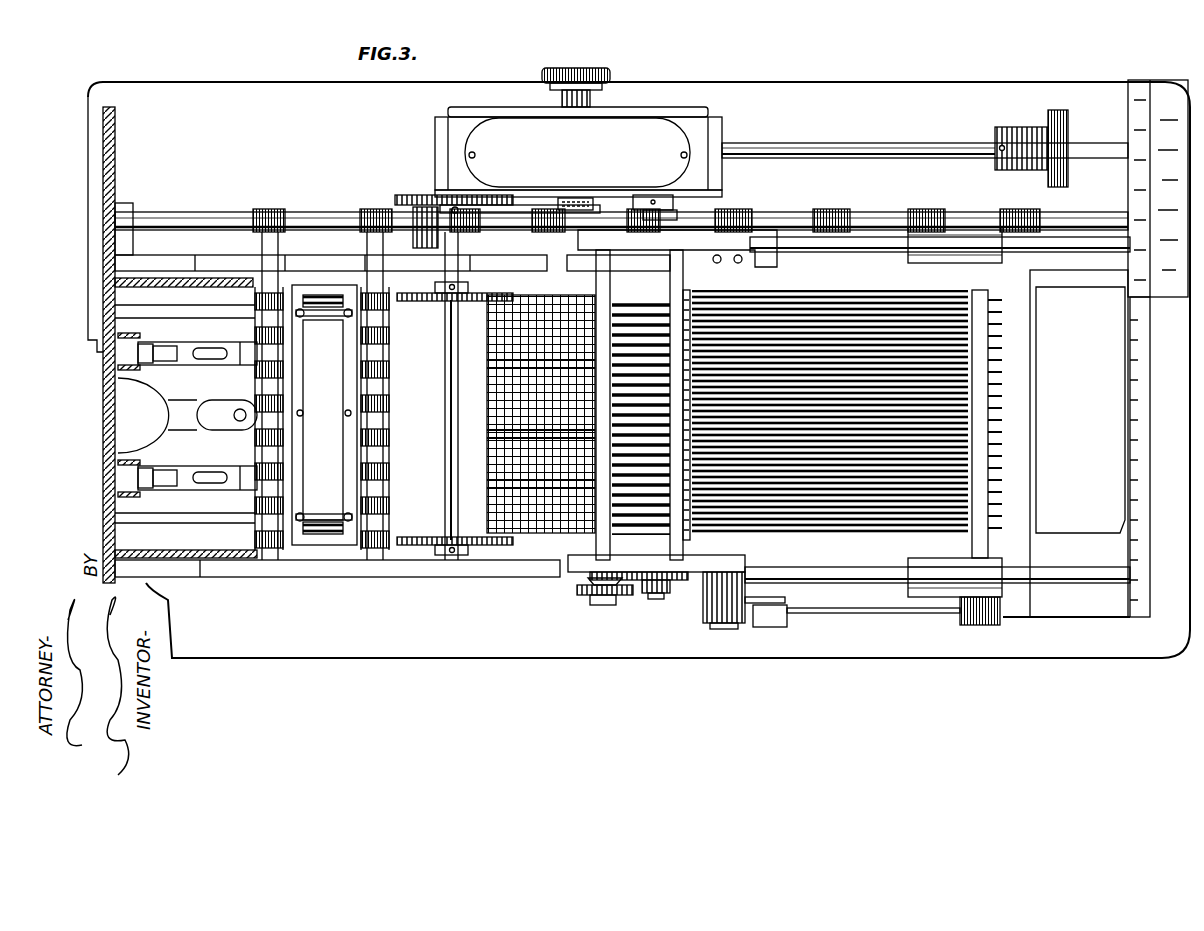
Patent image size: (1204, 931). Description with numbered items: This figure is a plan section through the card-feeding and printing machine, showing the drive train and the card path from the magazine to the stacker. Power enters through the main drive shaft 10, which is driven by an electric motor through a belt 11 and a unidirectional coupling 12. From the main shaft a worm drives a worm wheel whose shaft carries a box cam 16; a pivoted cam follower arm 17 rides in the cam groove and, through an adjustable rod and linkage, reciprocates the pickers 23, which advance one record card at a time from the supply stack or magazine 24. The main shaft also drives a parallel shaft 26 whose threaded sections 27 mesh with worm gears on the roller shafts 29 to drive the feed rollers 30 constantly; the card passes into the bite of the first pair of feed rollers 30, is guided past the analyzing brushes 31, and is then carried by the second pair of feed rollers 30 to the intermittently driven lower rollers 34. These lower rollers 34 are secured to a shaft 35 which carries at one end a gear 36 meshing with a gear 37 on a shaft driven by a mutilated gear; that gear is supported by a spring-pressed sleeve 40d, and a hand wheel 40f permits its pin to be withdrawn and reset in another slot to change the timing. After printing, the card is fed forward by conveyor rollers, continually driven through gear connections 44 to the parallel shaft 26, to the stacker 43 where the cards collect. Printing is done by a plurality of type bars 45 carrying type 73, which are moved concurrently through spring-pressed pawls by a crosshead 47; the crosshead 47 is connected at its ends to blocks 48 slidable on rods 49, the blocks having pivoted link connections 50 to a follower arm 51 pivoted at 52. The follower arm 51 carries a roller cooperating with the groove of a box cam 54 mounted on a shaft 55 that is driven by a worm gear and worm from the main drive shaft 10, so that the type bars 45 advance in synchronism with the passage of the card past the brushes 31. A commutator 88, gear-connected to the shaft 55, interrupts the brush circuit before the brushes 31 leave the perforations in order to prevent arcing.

The main drive shaft 10 is at (818, 152).
The belt 11 is at (1060, 112).
The unidirectional coupling 12 is at (1028, 127).
The box cam 16 is at (616, 200).
The cam follower arm 17 is at (546, 200).
The pickers 23 is at (238, 470).
The supply stack or magazine 24 is at (124, 412).
The parallel shaft 26 is at (975, 215).
The threaded sections 27 is at (273, 212).
The roller shafts 29 is at (262, 242).
The feed rollers 30 is at (258, 301).
The brushes 31 is at (330, 296).
The lower roller 34 is at (425, 298).
The shaft 35 is at (450, 423).
The gear 36 is at (410, 196).
The gear 37 is at (490, 205).
The sleeve 40d is at (592, 98).
The hand wheel 40f is at (590, 70).
The stacker 43 is at (1066, 443).
The gear connections 44 is at (922, 213).
The type bars 45 is at (880, 505).
The crosshead 47 is at (985, 390).
The blocks 48 is at (946, 264).
The rods 49 is at (868, 252).
The link connections 50 is at (856, 615).
The follower arm 51 is at (705, 607).
The pivot 52 is at (724, 629).
The box cam 54 is at (592, 242).
The shaft 55 is at (690, 212).
The type 73 is at (538, 322).
The commutator 88 is at (586, 594).